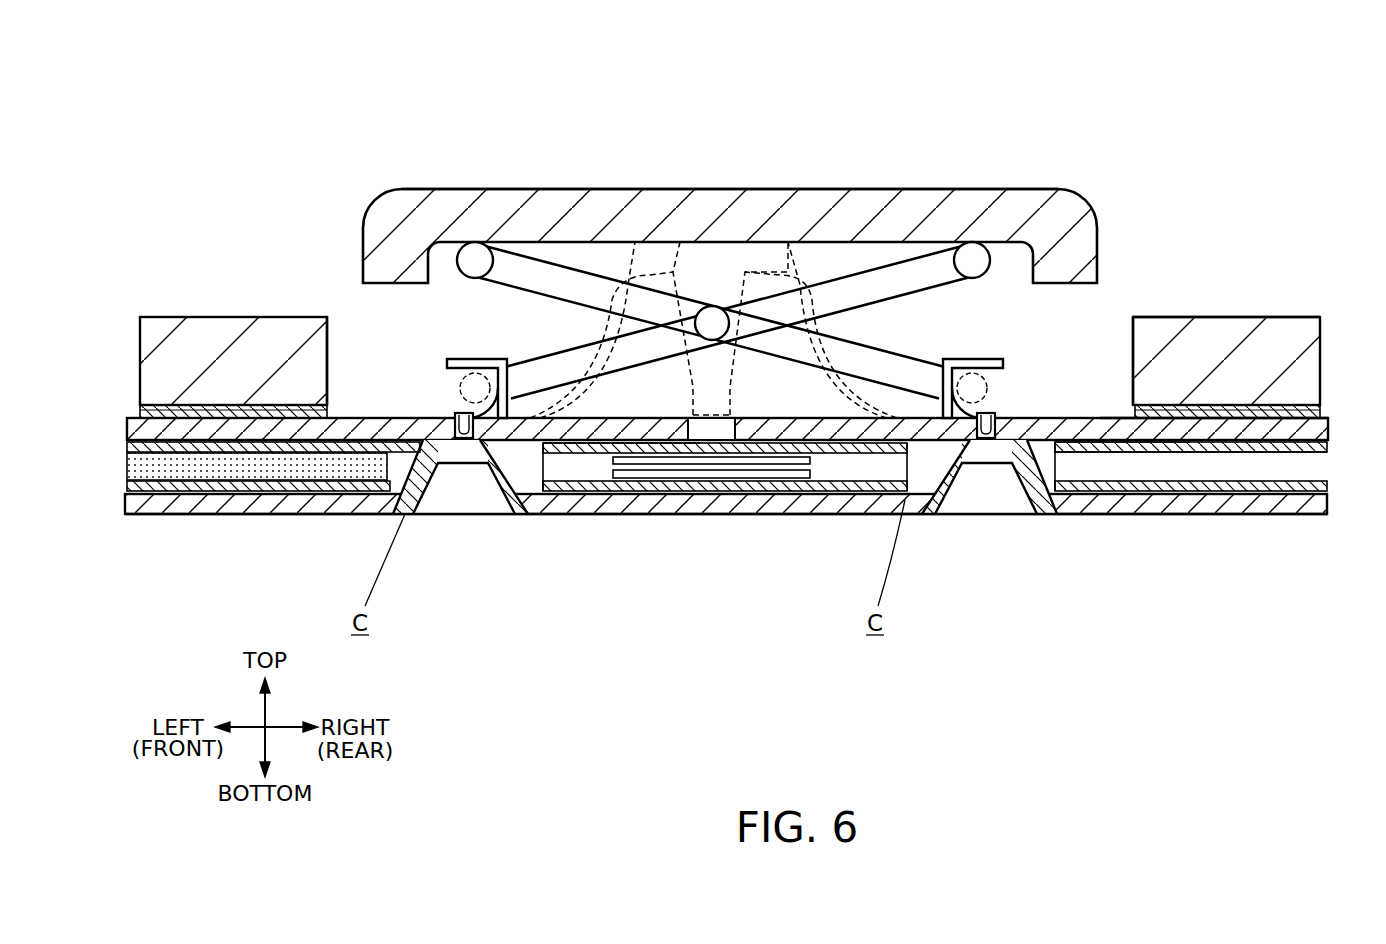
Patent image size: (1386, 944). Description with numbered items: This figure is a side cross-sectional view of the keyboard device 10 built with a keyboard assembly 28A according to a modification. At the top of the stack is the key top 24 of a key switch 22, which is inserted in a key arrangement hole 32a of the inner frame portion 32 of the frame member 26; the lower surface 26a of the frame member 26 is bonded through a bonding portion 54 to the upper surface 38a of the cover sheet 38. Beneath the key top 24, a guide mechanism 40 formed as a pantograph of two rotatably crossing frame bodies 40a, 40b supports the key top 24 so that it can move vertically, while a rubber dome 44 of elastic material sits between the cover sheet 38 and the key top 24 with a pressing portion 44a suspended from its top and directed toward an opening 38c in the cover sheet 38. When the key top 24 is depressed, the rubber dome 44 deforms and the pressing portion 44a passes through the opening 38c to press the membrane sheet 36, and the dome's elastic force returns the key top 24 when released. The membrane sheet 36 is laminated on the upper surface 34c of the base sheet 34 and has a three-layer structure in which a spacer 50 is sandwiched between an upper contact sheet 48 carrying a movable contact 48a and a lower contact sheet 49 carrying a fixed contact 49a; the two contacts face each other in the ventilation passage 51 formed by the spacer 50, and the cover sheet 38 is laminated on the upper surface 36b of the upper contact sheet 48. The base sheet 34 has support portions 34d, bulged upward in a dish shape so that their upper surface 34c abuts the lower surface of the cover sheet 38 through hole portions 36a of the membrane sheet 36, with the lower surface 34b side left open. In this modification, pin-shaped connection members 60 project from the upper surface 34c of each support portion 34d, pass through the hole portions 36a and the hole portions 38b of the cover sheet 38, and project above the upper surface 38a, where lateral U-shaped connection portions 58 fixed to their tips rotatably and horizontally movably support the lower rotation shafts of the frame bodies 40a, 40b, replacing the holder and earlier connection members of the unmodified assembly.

The keyboard device 10 is at (274, 97).
The key switch 22 is at (543, 180).
The key top 24 is at (773, 198).
The frame member 26 is at (1312, 310).
The lower surface of frame member 26a is at (213, 413).
The keyboard assembly 28A is at (1095, 150).
The inner frame portion 32 is at (178, 328).
The key arrangement hole 32a is at (323, 334).
The base sheet 34 is at (1320, 505).
The lower surface of base sheet 34b is at (1137, 515).
The upper surface of base sheet 34c is at (1222, 474).
The support portion 34d is at (416, 440).
The membrane sheet 36 is at (1331, 494).
The hole portion of membrane sheet 36a is at (545, 453).
The upper surface of membrane sheet 36b is at (1063, 447).
The cover sheet 38 is at (1322, 428).
The upper surface of cover sheet 38a is at (1110, 417).
The hole portion of cover sheet 38b is at (459, 405).
The opening of cover sheet 38c is at (735, 441).
The guide mechanism 40 is at (723, 234).
The frame body 40a is at (791, 326).
The frame body 40b is at (891, 281).
The rubber dome 44 is at (635, 242).
The pressing portion 44a is at (685, 242).
The upper contact sheet 48 is at (128, 446).
The movable contact 48a is at (650, 465).
The lower contact sheet 49 is at (127, 492).
The fixed contact 49a is at (702, 479).
The spacer 50 is at (127, 466).
The ventilation passage 51 is at (836, 466).
The bonding portion 54 is at (183, 413).
The connection portion 58 is at (470, 358).
The connection member 60 is at (466, 440).